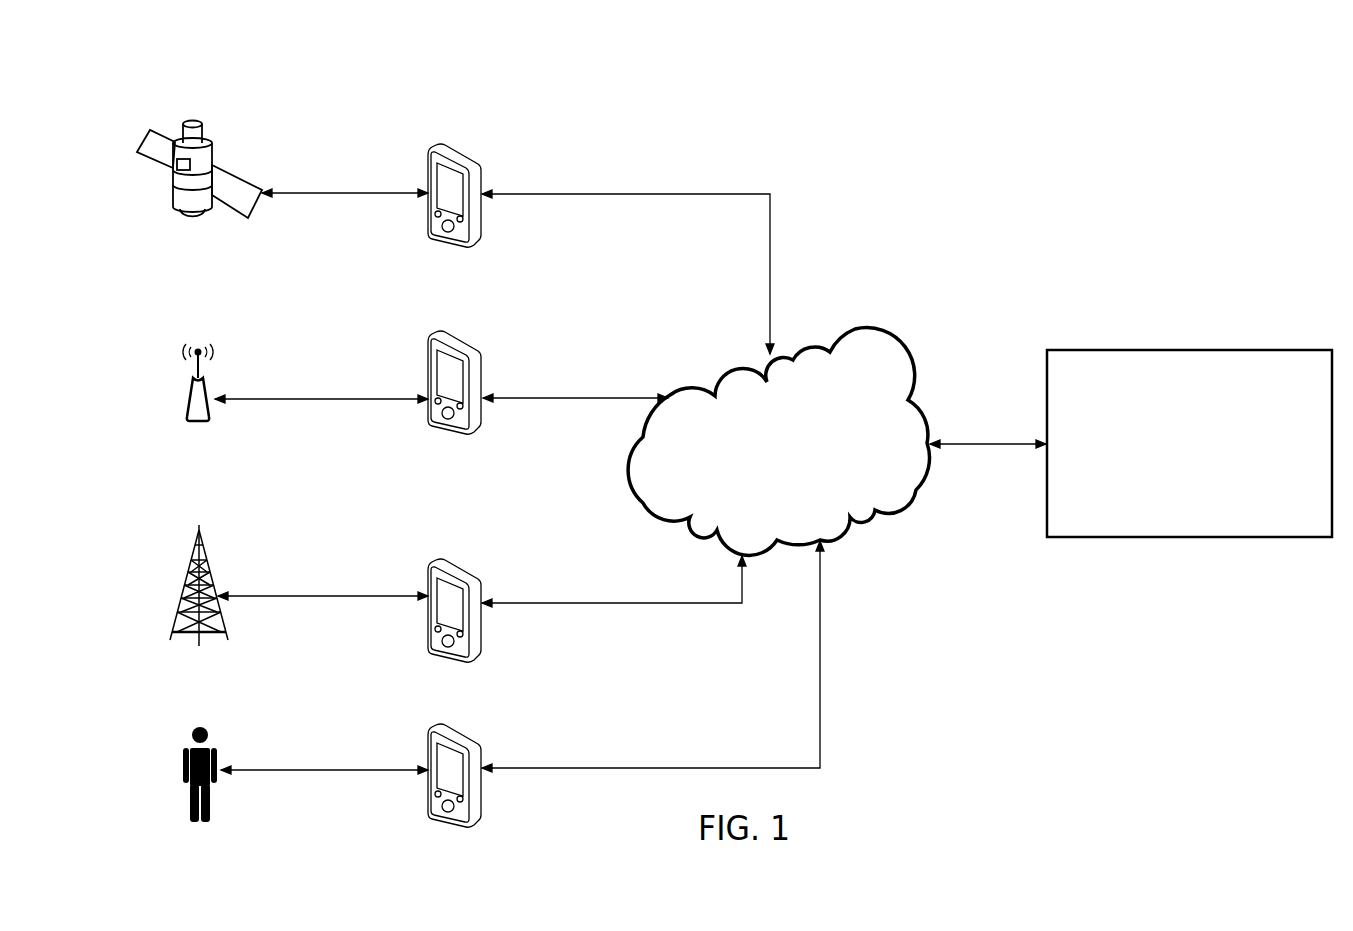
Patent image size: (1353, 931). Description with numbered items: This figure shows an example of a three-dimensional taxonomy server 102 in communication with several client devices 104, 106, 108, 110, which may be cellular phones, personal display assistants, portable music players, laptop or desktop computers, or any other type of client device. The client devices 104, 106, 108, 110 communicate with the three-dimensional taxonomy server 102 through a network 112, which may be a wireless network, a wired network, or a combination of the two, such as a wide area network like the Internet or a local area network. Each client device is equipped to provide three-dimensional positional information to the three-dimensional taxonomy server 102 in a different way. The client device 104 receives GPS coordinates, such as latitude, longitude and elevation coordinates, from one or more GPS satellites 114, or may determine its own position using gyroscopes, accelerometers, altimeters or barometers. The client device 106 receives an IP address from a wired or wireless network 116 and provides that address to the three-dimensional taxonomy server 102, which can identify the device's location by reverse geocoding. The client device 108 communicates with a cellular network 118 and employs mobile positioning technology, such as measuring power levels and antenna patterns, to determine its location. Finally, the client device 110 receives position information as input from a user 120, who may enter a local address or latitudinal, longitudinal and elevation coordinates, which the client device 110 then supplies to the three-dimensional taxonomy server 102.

The three-dimensional taxonomy server 102 is at (1306, 374).
The client device 104 is at (460, 146).
The client device 106 is at (460, 340).
The client device 108 is at (460, 562).
The client device 110 is at (457, 728).
The network 112 is at (790, 461).
The GPS satellite 114 is at (199, 122).
The wired or wireless network 116 is at (202, 347).
The cellular network 118 is at (200, 535).
The user 120 is at (202, 724).